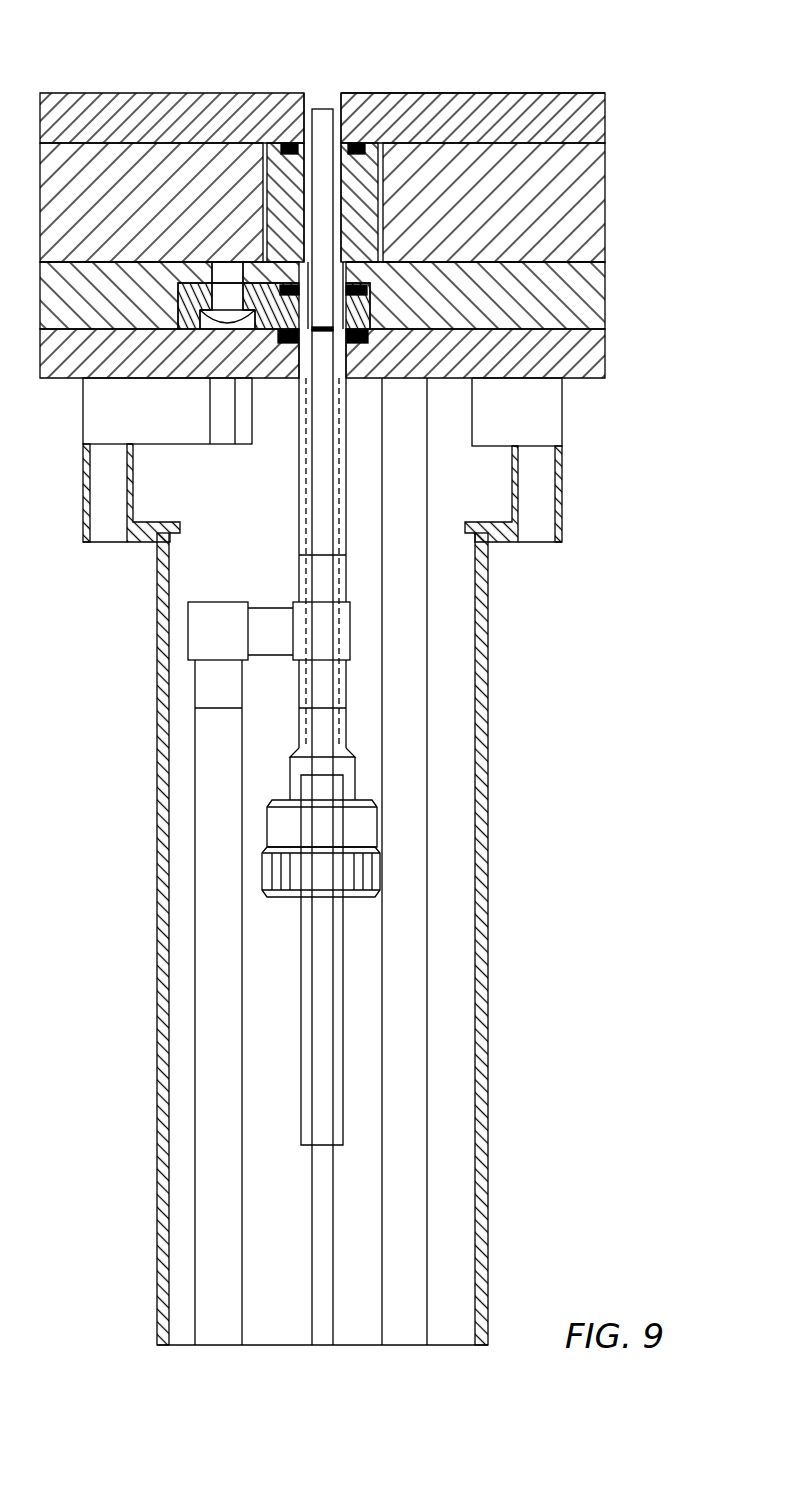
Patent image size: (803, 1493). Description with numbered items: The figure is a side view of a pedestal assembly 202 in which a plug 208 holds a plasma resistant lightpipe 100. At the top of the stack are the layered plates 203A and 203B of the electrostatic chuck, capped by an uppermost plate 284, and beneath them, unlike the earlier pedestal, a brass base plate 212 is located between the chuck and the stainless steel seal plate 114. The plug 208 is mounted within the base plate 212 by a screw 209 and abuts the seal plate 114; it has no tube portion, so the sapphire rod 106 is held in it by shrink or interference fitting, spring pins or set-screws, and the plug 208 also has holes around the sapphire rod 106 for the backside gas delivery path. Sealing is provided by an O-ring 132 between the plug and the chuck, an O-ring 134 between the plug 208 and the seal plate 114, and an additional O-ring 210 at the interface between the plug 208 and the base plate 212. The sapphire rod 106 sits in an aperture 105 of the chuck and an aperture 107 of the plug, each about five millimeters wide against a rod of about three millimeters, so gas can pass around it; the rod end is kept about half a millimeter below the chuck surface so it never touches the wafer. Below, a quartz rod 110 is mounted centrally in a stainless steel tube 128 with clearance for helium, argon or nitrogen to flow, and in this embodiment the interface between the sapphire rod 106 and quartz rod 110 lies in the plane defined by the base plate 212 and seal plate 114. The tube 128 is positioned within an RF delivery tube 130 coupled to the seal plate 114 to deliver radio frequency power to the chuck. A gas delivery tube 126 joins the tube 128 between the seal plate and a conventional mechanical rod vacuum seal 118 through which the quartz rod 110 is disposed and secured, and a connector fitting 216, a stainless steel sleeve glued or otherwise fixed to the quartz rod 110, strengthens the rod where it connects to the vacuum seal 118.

The lightpipe 100 is at (263, 477).
The aperture 105 is at (335, 82).
The sapphire rod 106 is at (325, 117).
The aperture 107 is at (307, 175).
The quartz rod 110 is at (334, 392).
The seal plate 114 is at (598, 347).
The mechanical rod vacuum seal 118 is at (365, 822).
The gas delivery tube 126 is at (232, 1097).
The tube 128 is at (334, 495).
The RF delivery tube 130 is at (155, 902).
The O-ring 132 is at (288, 143).
The O-ring 134 is at (287, 346).
The pedestal assembly 202 is at (672, 77).
The upper wall section 203A is at (548, 93).
The lower wall section 203B is at (598, 190).
The plug 208 is at (177, 300).
The screw 209 is at (227, 262).
The O-ring 210 is at (262, 212).
The brass base plate 212 is at (598, 278).
The connector fitting 216 is at (307, 1022).
The top plate 284 is at (598, 135).